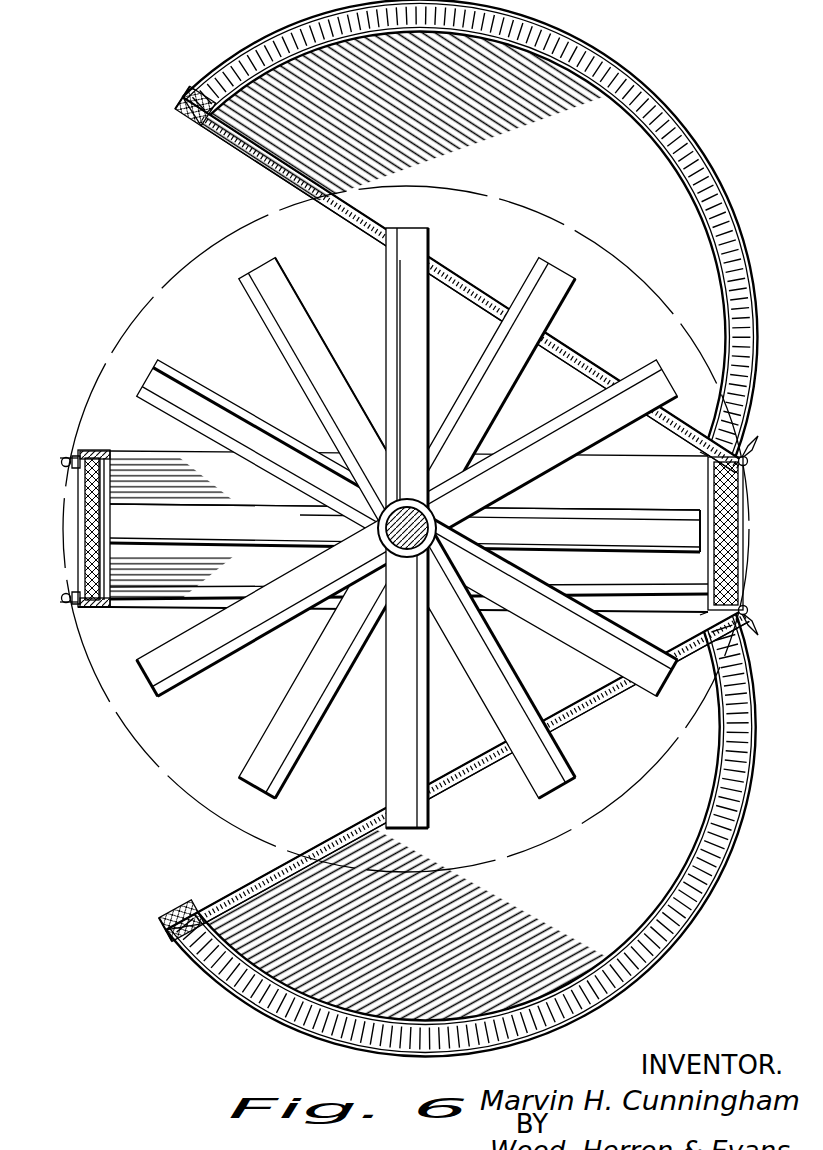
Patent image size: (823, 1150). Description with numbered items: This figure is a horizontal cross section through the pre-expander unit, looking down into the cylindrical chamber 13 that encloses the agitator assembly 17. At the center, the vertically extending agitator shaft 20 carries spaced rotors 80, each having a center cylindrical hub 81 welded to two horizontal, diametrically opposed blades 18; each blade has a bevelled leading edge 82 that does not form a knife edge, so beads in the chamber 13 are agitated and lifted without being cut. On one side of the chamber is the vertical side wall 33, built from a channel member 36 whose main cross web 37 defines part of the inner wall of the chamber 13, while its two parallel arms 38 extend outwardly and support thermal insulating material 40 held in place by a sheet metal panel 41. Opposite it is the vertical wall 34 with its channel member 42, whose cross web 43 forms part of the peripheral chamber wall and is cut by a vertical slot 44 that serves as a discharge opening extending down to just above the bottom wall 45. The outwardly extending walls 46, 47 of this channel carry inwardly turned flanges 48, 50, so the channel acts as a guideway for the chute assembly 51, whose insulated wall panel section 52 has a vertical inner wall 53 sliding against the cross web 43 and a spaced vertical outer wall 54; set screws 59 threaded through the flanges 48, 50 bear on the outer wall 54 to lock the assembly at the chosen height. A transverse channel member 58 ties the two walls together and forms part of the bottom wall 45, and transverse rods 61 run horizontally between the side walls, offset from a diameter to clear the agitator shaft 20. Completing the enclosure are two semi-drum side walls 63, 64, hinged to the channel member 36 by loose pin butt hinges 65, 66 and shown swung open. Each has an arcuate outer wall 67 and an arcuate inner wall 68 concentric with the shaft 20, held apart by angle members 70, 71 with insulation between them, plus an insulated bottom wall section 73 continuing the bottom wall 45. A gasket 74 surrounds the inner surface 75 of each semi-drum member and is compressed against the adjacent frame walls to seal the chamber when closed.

The cylindrical chamber 13 is at (196, 740).
The agitator assembly 17 is at (264, 352).
The blades 18 is at (515, 383).
The agitator shaft 20 is at (440, 528).
The vertical side wall 33 is at (748, 514).
The vertical wall 34 is at (86, 612).
The channel member 36 is at (704, 487).
The main cross web 37 is at (706, 566).
The parallel arms 38 is at (705, 456).
The thermal insulating material 40 is at (540, 30).
The sheet metal panel 41 is at (746, 472).
The channel member 42 is at (102, 447).
The cross web 43 is at (112, 614).
The vertical slot 44 is at (128, 523).
The bottom wall 45 is at (150, 452).
The outwardly extending wall 46 is at (82, 618).
The outwardly extending wall 47 is at (84, 440).
The inwardly turned flange 48 is at (66, 457).
The inwardly turned flange 50 is at (78, 606).
The chute assembly 51 is at (384, 296).
The insulated wall panel section 52 is at (82, 497).
The vertical inner wall 53 is at (176, 478).
The vertical outer wall 54 is at (80, 556).
The transverse channel member 58 is at (498, 617).
The set screws 59 is at (60, 460).
The transverse rods 61 is at (155, 592).
The semi-drum side wall 63 is at (642, 982).
The semi-drum side wall 64 is at (626, 66).
The loose pin butt hinge 65 is at (749, 610).
The loose pin butt hinge 66 is at (748, 458).
The arcuate outer wall 67 is at (668, 110).
The arcuate inner wall 68 is at (640, 128).
The angle member 70 is at (178, 98).
The angle member 71 is at (752, 405).
The bottom wall section 73 is at (352, 224).
The gasket 74 is at (270, 178).
The inner surface 75 is at (182, 128).
The rotors 80 is at (385, 347).
The center cylindrical hub 81 is at (434, 512).
The bevelled leading edge 82 is at (238, 546).